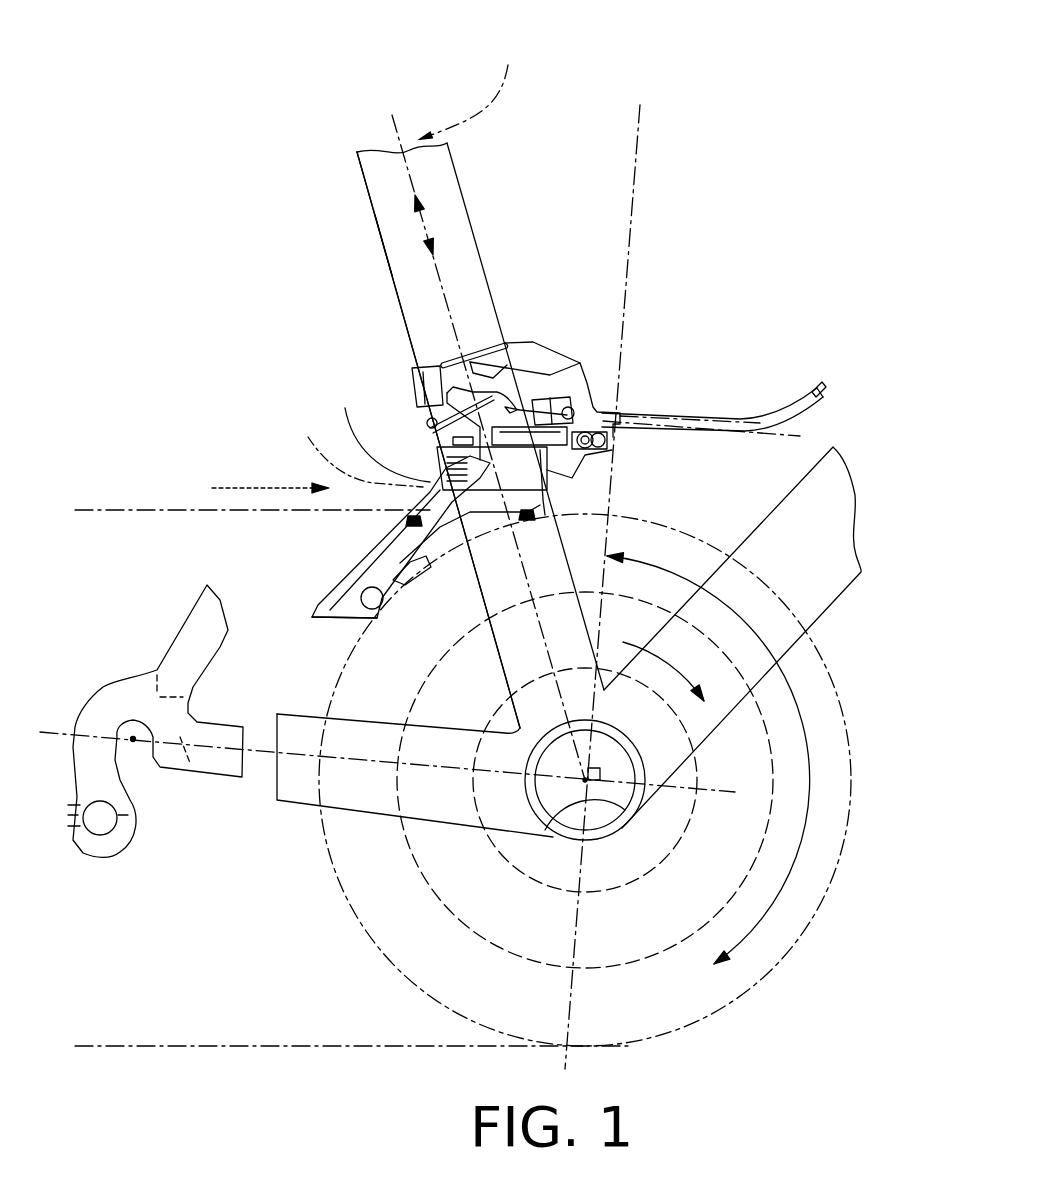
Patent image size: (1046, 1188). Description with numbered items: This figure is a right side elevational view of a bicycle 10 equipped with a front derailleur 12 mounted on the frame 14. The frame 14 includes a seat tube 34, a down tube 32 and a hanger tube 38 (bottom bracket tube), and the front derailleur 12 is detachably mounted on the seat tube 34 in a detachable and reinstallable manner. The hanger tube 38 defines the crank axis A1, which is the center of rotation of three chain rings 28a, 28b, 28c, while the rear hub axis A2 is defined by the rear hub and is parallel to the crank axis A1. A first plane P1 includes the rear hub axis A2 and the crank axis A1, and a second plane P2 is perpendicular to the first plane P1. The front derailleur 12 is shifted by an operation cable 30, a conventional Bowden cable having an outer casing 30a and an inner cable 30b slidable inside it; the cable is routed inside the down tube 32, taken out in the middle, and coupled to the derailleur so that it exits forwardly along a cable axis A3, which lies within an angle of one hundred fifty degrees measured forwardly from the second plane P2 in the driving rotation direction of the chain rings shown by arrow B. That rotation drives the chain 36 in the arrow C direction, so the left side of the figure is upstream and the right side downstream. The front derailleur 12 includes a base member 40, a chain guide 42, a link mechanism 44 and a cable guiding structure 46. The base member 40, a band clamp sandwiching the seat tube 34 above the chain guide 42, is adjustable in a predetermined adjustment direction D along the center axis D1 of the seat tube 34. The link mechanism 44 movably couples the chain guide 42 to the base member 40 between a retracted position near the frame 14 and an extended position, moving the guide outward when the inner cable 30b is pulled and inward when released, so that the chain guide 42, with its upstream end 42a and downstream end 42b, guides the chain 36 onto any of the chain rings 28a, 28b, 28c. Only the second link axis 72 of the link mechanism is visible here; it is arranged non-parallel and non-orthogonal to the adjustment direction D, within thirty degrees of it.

The bicycle 10 is at (346, 176).
The front derailleur 12 is at (555, 332).
The frame 14 is at (463, 180).
The chain ring 28a is at (337, 873).
The chain ring 28b is at (402, 846).
The chain ring 28c is at (480, 852).
The operation cable 30 is at (741, 436).
The outer casing 30a is at (772, 412).
The inner cable 30b is at (821, 388).
The down tube 32 is at (772, 512).
The seat tube 34 is at (382, 228).
The chain 36 is at (170, 510).
The hanger tube 38 is at (531, 688).
The base member 40 is at (452, 350).
The chain guide 42 is at (350, 570).
The upstream end 42a is at (314, 617).
The downstream end 42b is at (600, 502).
The link mechanism 44 is at (503, 372).
The cable guiding structure 46 is at (600, 396).
The second link axis 72 is at (353, 446).
The crank axis A1 is at (553, 838).
The rear hub axis A2 is at (134, 745).
The cable axis A3 is at (668, 412).
The driving rotation direction B is at (663, 667).
The chain movement direction C is at (270, 474).
The predetermined adjustment direction D is at (437, 240).
The center axis of the seat tube D1 is at (481, 85).
The first plane P1 is at (362, 757).
The second plane P2 is at (637, 160).